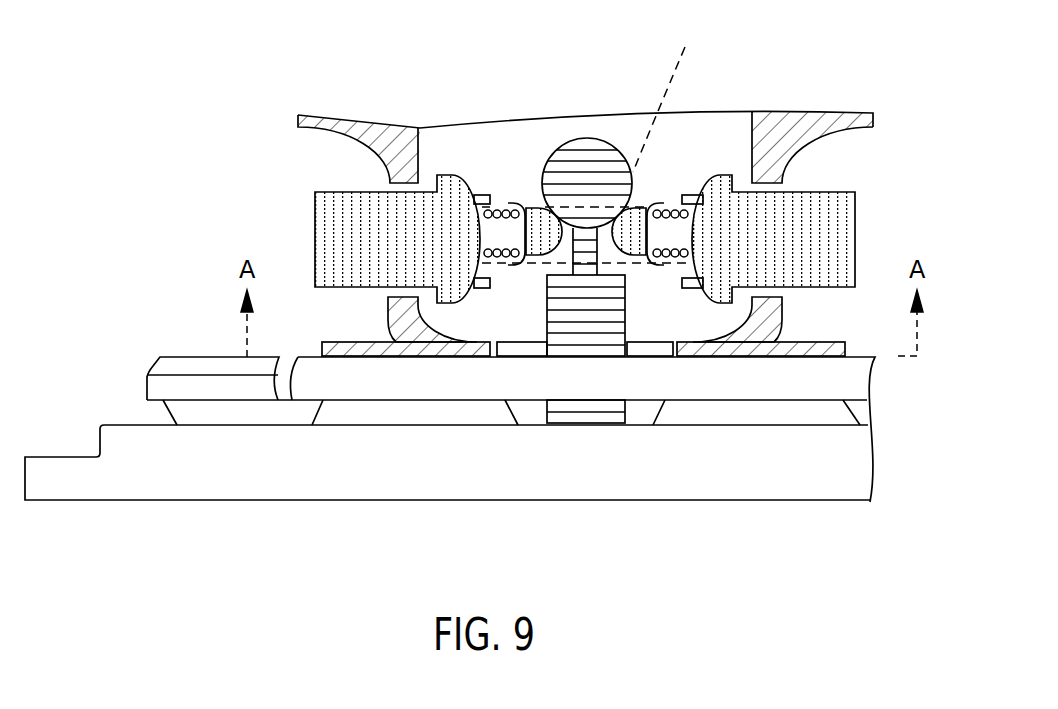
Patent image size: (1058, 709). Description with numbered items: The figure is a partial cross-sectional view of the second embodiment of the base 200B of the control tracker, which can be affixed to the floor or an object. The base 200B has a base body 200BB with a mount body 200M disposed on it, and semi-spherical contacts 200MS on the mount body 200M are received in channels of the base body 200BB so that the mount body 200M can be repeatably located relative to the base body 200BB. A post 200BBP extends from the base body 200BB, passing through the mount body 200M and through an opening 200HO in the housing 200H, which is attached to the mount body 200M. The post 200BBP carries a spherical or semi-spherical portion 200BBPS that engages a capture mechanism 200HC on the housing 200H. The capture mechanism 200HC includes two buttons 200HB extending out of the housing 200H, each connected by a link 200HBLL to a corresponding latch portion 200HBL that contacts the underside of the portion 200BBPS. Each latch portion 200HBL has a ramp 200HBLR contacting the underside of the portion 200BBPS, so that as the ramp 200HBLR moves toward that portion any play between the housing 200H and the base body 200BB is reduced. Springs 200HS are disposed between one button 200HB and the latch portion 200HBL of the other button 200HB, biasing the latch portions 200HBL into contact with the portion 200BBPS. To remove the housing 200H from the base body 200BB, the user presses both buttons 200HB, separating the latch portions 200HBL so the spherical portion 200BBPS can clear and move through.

The housing 200H is at (813, 113).
The capture mechanism 200HC is at (473, 133).
The spring 200HS is at (498, 205).
The button 200HB is at (320, 211).
The latch portion 200HBL is at (648, 205).
The ramp 200HBLR is at (602, 138).
The link 200HBLL is at (565, 250).
The spherical or semi-spherical portion 200BBPS is at (607, 173).
The post 200BBP is at (568, 328).
The opening 200HO is at (648, 350).
The mount body 200M is at (173, 362).
The semi-spherical contact 200MS is at (233, 415).
The base body 200BB is at (320, 490).
The base 200B is at (806, 486).